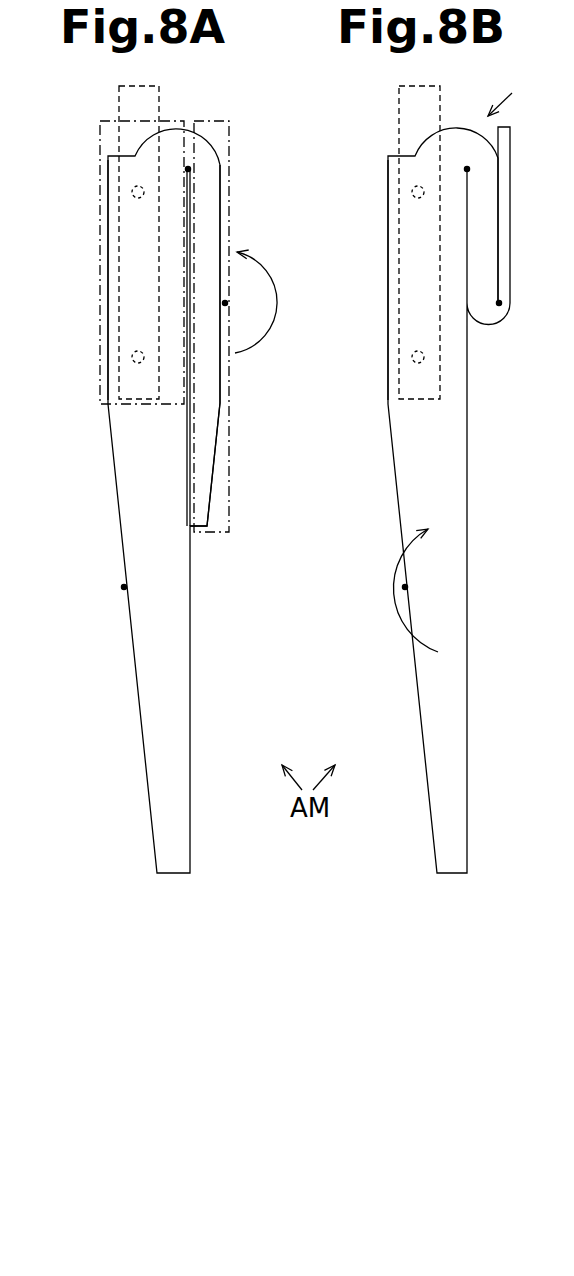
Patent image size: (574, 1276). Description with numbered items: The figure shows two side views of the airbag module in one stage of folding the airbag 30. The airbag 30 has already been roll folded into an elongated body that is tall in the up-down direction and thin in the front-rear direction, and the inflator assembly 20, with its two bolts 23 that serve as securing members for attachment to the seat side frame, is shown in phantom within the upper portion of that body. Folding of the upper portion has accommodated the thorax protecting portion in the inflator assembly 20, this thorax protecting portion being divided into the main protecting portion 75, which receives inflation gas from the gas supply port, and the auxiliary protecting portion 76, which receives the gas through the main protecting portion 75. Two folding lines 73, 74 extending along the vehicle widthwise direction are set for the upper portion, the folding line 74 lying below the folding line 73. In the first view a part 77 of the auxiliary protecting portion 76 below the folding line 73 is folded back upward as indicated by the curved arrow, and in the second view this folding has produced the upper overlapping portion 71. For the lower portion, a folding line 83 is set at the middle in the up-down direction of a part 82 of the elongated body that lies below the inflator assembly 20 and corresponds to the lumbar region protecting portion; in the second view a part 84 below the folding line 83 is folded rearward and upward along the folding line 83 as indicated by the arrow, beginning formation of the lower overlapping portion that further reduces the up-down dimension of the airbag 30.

In FIG. 8A, the inflator assembly 20 is at (128, 101).
In FIG. 8B, the inflator assembly 20 is at (408, 101).
In FIG. 8A, the bolts 23 is at (132, 192).
In FIG. 8B, the bolts 23 is at (412, 192).
In FIG. 8A, the airbag 30 is at (108, 257).
In FIG. 8B, the airbag 30 is at (388, 257).
In FIG. 8B, the upper overlapping portion 71 is at (517, 97).
In FIG. 8A, the folding line 73 is at (228, 303).
In FIG. 8B, the folding line 73 is at (502, 303).
In FIG. 8A, the folding line 74 is at (190, 169).
In FIG. 8B, the folding line 74 is at (470, 167).
In FIG. 8A, the main protecting portion 75 is at (100, 383).
In FIG. 8A, the auxiliary protecting portion 76 is at (229, 473).
In FIG. 8A, the part of the auxiliary protecting portion 77 is at (208, 400).
In FIG. 8B, the part of the auxiliary protecting portion 77 is at (505, 241).
In FIG. 8A, the part of the elongated body 82 is at (175, 707).
In FIG. 8A, the folding line 83 is at (127, 587).
In FIG. 8B, the folding line 83 is at (408, 587).
In FIG. 8B, the part below the folding line 84 is at (468, 705).